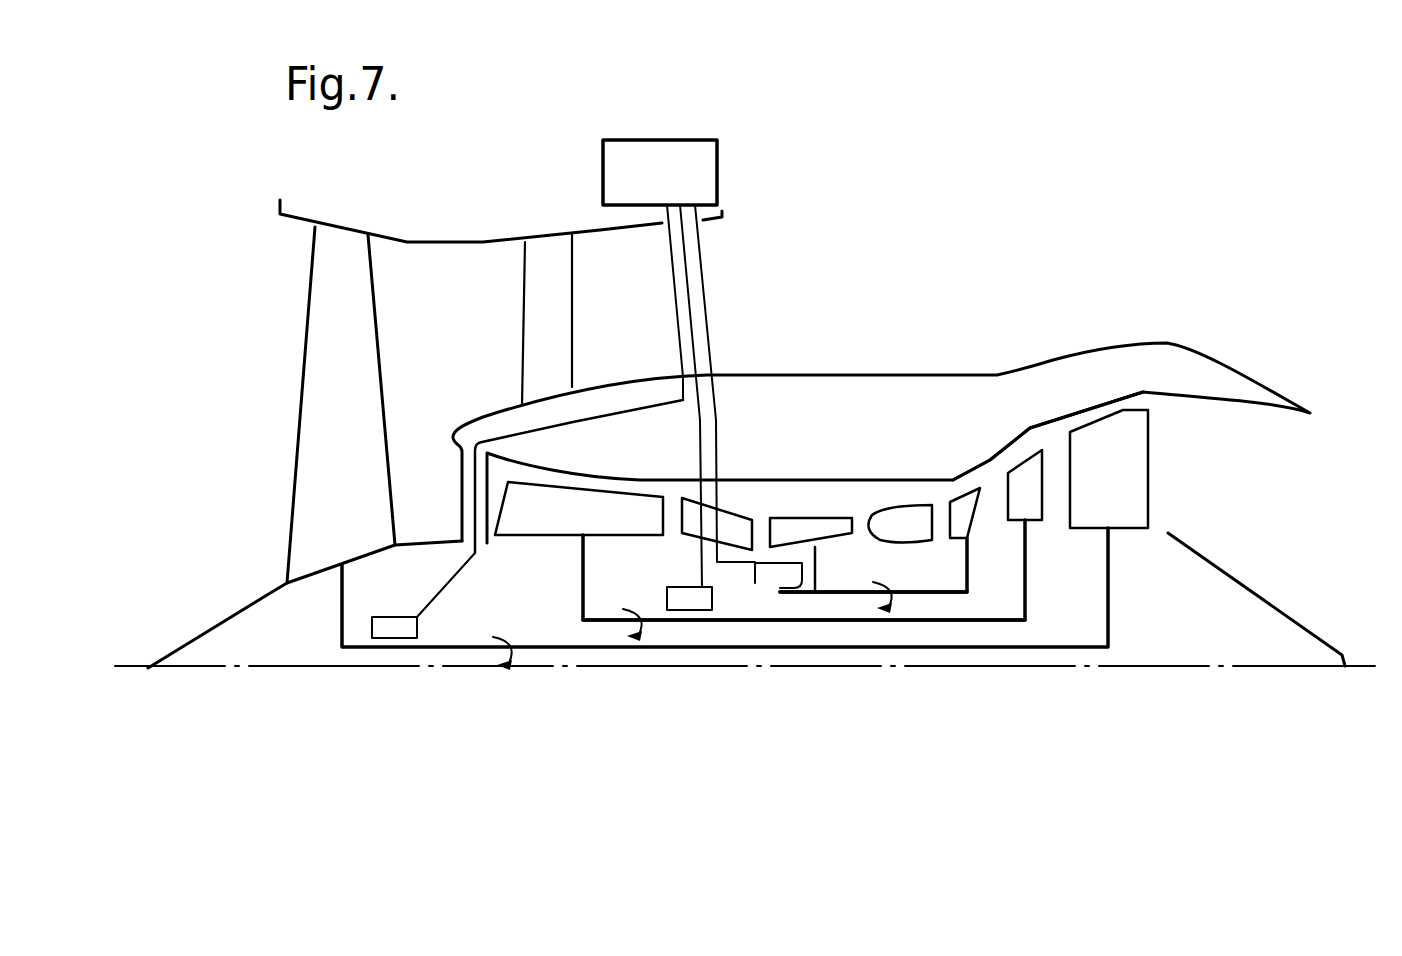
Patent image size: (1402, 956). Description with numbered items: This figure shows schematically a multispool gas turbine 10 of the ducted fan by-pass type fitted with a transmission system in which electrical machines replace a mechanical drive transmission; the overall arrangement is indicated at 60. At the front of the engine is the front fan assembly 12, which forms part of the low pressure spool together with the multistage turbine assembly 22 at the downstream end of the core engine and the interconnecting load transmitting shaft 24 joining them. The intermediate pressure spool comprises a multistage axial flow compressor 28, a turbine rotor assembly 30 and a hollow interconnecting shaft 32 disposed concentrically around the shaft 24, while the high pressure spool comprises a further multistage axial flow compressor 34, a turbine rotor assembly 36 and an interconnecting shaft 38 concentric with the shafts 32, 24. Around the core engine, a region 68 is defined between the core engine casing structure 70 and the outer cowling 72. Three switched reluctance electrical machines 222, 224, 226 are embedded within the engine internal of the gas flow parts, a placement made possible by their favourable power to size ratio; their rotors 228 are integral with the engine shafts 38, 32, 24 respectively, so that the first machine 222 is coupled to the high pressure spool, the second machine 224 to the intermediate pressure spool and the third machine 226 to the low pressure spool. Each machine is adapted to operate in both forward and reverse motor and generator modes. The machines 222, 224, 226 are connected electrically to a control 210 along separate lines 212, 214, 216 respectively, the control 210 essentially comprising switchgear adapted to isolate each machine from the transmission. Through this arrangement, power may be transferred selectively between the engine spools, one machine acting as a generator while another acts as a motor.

The multispool gas turbine 10 is at (490, 170).
The front fan assembly 12 is at (318, 418).
The multistage turbine assembly 22 is at (1137, 512).
The interconnecting load transmitting shaft 24 is at (473, 647).
The multistage axial flow compressor 28 is at (565, 518).
The turbine rotor assembly 30 is at (1035, 508).
The hollow interconnecting shaft 32 is at (993, 621).
The multistage axial flow compressor 34 is at (808, 527).
The turbine rotor assembly 36 is at (977, 525).
The interconnecting shaft 38 is at (917, 595).
The control arrangement 60 is at (800, 162).
The region 68 is at (832, 445).
The core engine casing structure 70 is at (931, 478).
The cowling 72 is at (975, 372).
The control 210 is at (653, 157).
The line 212 is at (712, 327).
The line 214 is at (690, 285).
The line 216 is at (675, 302).
The switched reluctance electrical machine 222 is at (767, 580).
The switched reluctance electrical machine 224 is at (670, 593).
The switched reluctance electrical machine 226 is at (397, 620).
The rotors 228 is at (383, 640).